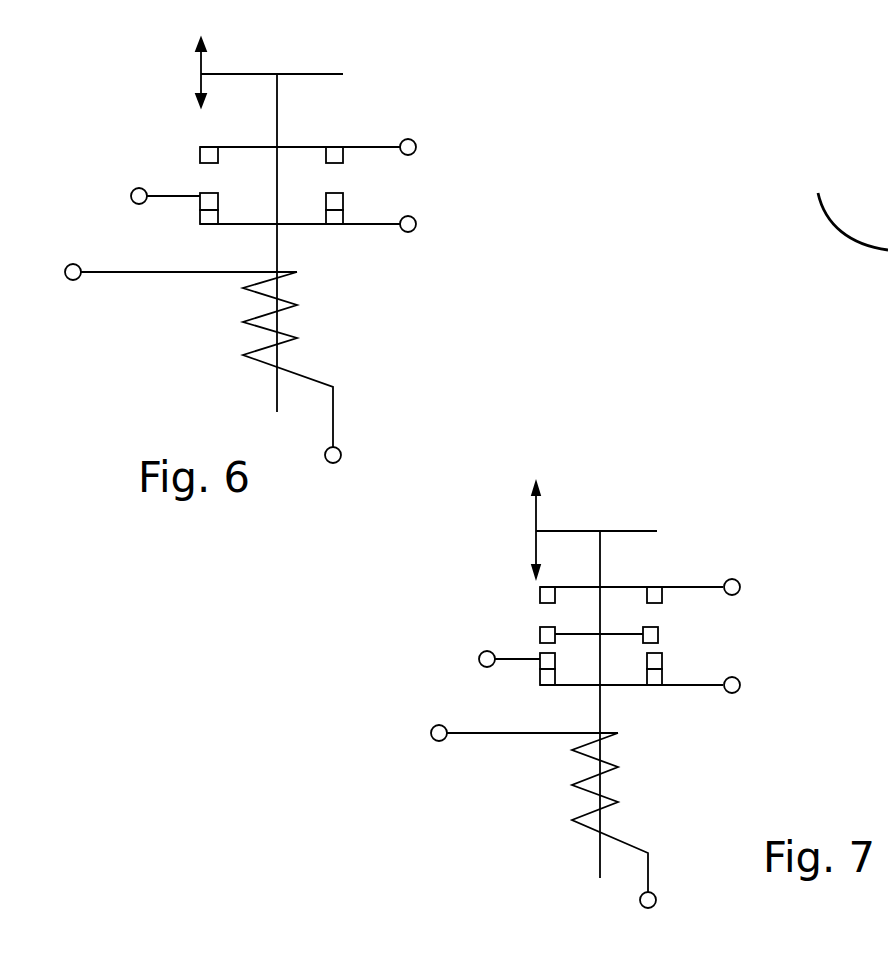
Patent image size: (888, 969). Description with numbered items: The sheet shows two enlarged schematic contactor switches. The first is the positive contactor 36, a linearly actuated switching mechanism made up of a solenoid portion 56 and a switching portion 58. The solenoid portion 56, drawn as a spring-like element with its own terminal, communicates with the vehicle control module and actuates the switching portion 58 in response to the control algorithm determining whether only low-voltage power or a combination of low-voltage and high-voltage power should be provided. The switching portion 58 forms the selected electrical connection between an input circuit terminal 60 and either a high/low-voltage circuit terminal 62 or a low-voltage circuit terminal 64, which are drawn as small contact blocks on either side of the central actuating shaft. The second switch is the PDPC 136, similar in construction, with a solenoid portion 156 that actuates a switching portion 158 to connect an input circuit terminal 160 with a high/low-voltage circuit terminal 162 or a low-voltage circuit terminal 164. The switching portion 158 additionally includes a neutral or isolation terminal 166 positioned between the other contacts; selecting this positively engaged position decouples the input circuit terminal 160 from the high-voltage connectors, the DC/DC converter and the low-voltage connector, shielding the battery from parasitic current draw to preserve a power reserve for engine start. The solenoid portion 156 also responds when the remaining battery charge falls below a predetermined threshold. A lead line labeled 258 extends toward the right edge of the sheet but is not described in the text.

In FIG. 6, the positive contactor 36 is at (420, 110).
In FIG. 6, the solenoid portion 56 is at (228, 308).
In FIG. 6, the switching portion 58 is at (291, 196).
In FIG. 6, the input circuit terminal 60 is at (203, 200).
In FIG. 6, the high/low-voltage circuit terminal 62 is at (205, 225).
In FIG. 6, the low-voltage circuit terminal 64 is at (213, 147).
In FIG. 7, the PDPC 136 is at (703, 468).
In FIG. 7, the solenoid portion 156 is at (530, 787).
In FIG. 7, the switching portion 158 is at (616, 618).
In FIG. 7, the input circuit terminal 160 is at (543, 658).
In FIG. 7, the high/low-voltage circuit terminal 162 is at (545, 682).
In FIG. 7, the low-voltage circuit terminal 164 is at (547, 600).
In FIG. 7, the isolation terminal 166 is at (540, 634).
In FIG. 7, the lead line 258 is at (835, 202).